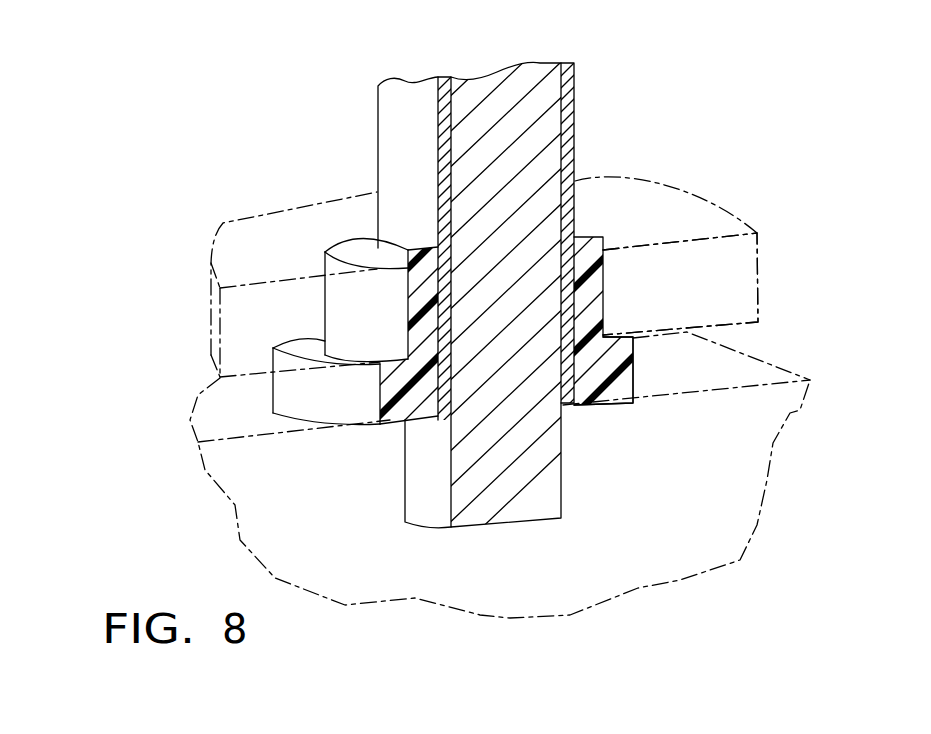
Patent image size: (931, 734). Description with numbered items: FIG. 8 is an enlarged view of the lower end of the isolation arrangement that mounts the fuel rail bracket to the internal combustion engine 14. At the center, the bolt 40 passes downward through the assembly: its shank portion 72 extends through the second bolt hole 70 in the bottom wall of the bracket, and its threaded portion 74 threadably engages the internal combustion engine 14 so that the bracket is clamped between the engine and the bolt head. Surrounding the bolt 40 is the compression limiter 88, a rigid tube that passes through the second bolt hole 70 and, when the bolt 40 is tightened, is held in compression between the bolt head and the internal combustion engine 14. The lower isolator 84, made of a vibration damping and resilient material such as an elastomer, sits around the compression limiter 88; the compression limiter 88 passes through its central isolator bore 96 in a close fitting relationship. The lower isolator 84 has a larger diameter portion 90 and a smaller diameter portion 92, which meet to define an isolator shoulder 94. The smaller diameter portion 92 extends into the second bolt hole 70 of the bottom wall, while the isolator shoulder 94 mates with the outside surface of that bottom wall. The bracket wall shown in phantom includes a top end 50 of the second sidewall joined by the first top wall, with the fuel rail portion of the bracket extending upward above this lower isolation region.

The internal combustion engine 14 is at (757, 460).
The bolt 40 is at (541, 278).
The shank portion 72 is at (548, 120).
The top end 50 is at (263, 258).
The second bolt hole 70 is at (428, 240).
The threaded portion 74 is at (502, 515).
The lower isolator 84 is at (623, 272).
The smaller diameter portion 92 is at (597, 253).
The compression limiter 88 is at (440, 113).
The larger diameter portion 90 is at (627, 383).
The isolator shoulder 94 is at (620, 330).
The isolator bore 96 is at (564, 389).